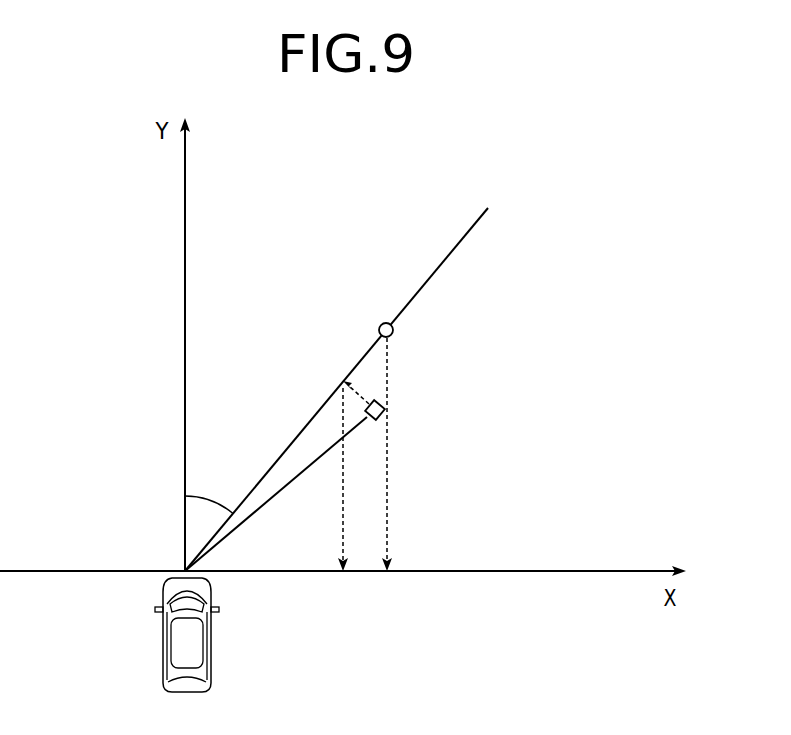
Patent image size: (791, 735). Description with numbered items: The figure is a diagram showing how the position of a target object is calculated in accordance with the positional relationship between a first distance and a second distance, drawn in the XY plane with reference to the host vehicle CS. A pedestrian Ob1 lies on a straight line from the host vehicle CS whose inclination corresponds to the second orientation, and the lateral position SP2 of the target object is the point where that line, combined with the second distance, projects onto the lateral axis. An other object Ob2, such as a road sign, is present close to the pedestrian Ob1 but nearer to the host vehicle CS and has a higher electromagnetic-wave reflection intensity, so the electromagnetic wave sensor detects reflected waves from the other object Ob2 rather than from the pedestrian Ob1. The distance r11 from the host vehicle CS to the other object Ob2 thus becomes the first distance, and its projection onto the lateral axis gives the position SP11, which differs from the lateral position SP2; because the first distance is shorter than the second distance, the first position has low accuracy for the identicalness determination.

The pedestrian Ob1 is at (393, 333).
The other object Ob2 is at (376, 418).
The host vehicle CS is at (211, 637).
The position on X axis of projection of second object SP11 is at (338, 494).
The lateral position SP2 is at (390, 574).
The distance to second object r11 is at (276, 494).